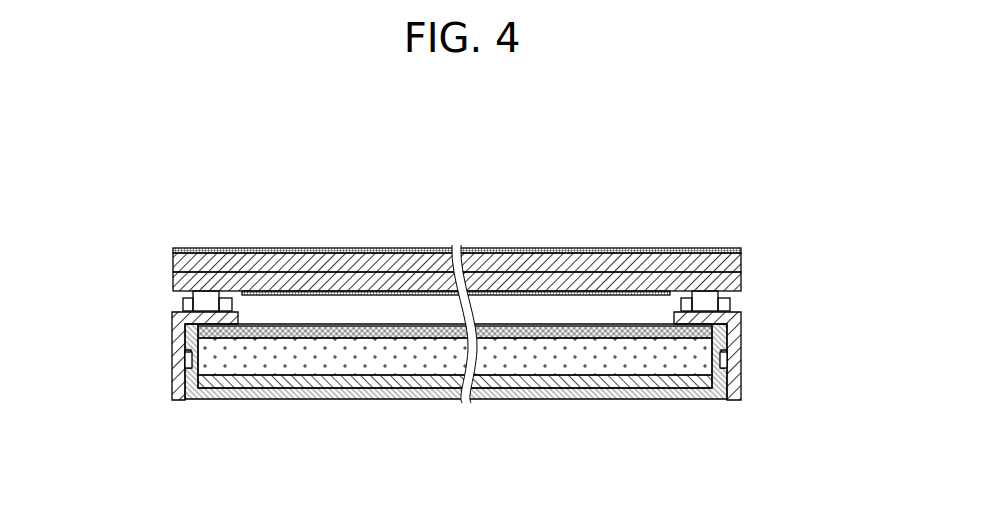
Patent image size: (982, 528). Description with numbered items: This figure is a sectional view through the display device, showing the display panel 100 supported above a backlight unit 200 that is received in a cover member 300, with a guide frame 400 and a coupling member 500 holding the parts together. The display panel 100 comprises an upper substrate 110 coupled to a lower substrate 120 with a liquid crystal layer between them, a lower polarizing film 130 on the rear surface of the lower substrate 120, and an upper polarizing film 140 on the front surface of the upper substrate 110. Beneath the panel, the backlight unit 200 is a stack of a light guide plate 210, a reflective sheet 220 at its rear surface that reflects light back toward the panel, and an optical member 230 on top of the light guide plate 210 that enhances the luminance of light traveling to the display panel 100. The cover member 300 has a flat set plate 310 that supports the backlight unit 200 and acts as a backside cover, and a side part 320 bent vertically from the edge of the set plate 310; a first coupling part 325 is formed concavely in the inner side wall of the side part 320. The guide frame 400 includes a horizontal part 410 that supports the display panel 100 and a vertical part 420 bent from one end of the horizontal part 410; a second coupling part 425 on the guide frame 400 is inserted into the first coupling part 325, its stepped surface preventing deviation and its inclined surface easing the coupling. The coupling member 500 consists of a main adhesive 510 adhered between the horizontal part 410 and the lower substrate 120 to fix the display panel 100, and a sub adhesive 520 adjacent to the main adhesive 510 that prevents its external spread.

The display panel 100 is at (457, 230).
The upper substrate 110 is at (540, 266).
The lower substrate 120 is at (598, 283).
The lower polarizing film 130 is at (502, 199).
The upper polarizing film 140 is at (503, 250).
The backlight unit 200 is at (455, 402).
The light guide plate 210 is at (345, 358).
The reflective sheet 220 is at (285, 444).
The optical member 230 is at (295, 333).
The cover member 300 is at (475, 407).
The set plate 310 is at (655, 395).
The side part 320 is at (718, 380).
The first coupling part 325 is at (660, 456).
The guide frame 400 is at (510, 349).
The horizontal part 410 is at (735, 318).
The vertical part 420 is at (735, 333).
The second coupling part 425 is at (490, 360).
The coupling member 500 is at (394, 292).
The main adhesive 510 is at (207, 300).
The sub adhesive 520 is at (190, 303).